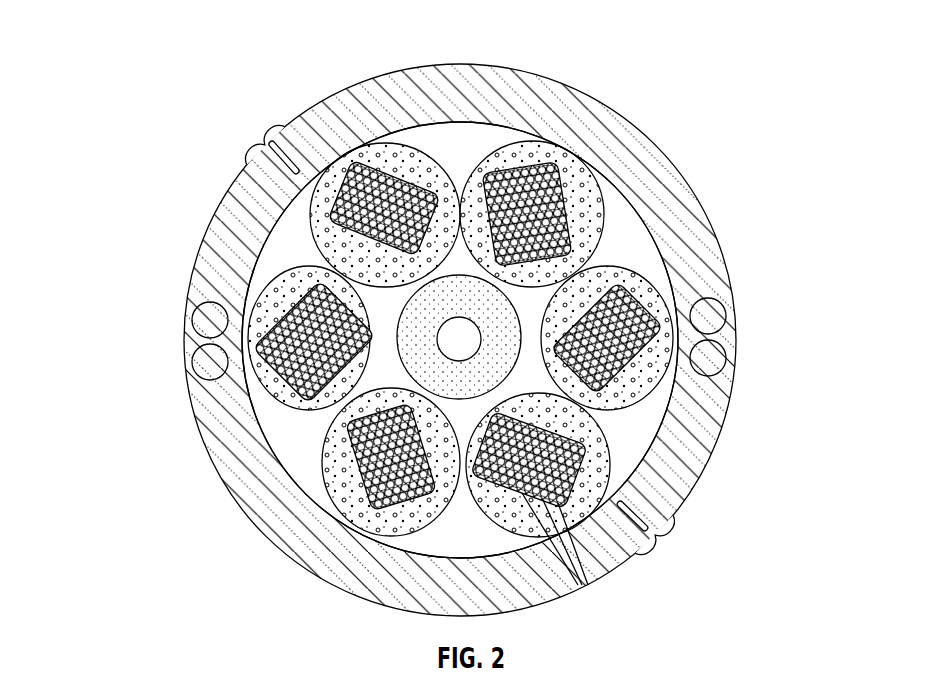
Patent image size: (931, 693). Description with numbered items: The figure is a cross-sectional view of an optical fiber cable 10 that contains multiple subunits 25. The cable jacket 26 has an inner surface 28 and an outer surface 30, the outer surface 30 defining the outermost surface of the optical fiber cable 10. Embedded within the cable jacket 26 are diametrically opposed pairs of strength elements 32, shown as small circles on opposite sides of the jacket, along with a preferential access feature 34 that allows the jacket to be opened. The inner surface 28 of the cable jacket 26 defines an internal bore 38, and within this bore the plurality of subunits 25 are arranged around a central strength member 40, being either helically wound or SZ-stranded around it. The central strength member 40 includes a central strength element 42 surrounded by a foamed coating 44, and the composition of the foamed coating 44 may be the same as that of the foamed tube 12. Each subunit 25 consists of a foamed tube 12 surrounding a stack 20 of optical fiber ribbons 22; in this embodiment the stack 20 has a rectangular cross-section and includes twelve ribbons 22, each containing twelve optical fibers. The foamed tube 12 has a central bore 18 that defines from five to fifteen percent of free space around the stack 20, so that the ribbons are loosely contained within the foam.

The optical fiber cable 10 is at (153, 135).
The foamed tube 12 is at (572, 167).
The central bore 18 is at (531, 142).
The stack 20 is at (659, 300).
The optical fiber ribbons 22 is at (586, 585).
The subunits 25 is at (647, 259).
The cable jacket 26 is at (222, 250).
The inner surface 28 is at (268, 220).
The outer surface 30 is at (197, 425).
The strength elements 32 is at (712, 355).
The preferential access feature 34 is at (280, 143).
The internal bore 38 is at (448, 128).
The central strength member 40 is at (400, 195).
The central strength element 42 is at (455, 343).
The foamed coating 44 is at (473, 390).